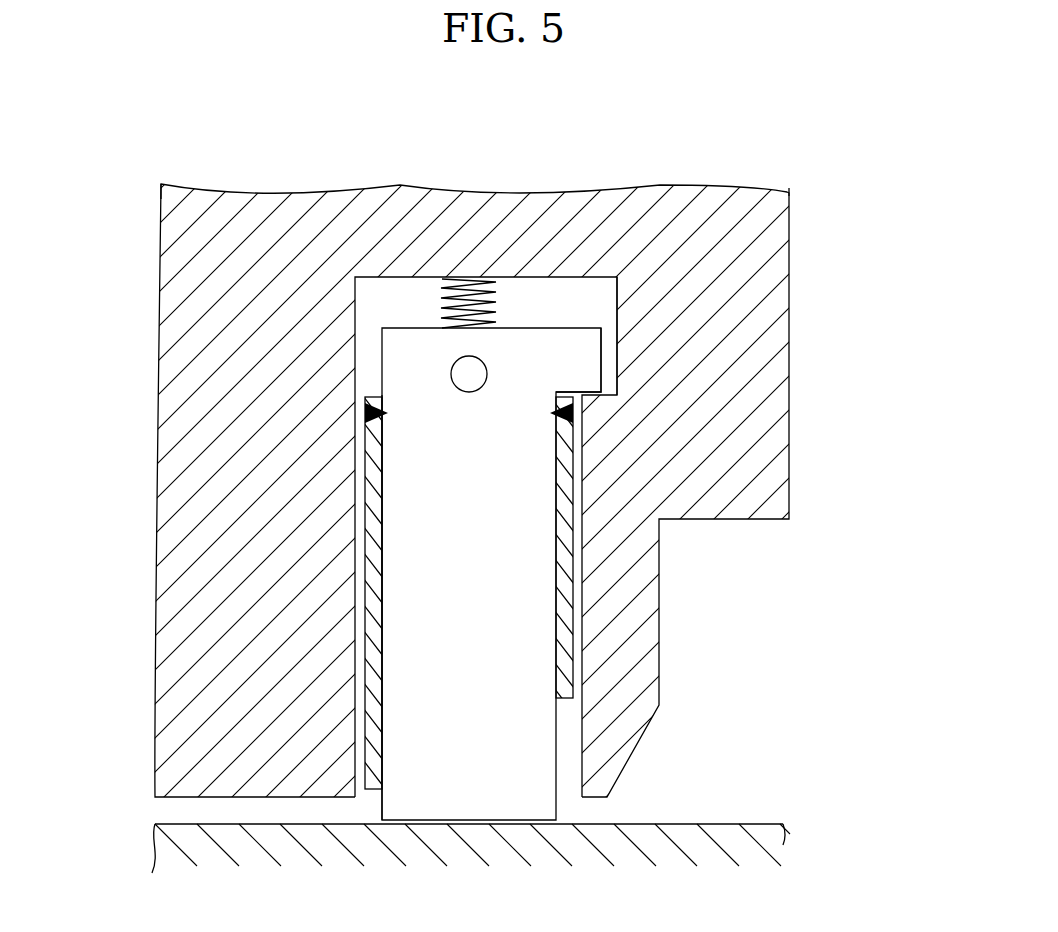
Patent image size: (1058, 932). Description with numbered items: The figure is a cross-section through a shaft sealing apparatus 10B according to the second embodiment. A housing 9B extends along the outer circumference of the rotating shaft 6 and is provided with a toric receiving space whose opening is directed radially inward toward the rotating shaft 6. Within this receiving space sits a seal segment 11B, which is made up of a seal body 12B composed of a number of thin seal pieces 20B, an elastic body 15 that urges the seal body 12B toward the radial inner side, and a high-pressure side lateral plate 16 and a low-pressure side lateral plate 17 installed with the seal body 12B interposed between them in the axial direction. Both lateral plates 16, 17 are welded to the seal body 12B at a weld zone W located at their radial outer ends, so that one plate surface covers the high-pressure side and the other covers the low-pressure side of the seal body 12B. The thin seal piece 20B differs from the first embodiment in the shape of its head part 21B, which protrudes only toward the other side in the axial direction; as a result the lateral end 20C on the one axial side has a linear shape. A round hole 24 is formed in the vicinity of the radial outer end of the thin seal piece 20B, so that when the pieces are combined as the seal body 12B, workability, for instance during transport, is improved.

The shaft sealing apparatus 10B is at (753, 158).
The housing 9B is at (770, 232).
The seal segment 11B is at (517, 300).
The seal body 12B is at (551, 312).
The elastic body 15 is at (465, 300).
The high-pressure side lateral plate 16 is at (372, 562).
The low-pressure side lateral plate 17 is at (563, 608).
The thin seal piece 20B is at (545, 762).
The lateral end 20C is at (380, 647).
The head part 21B is at (588, 360).
The round hole 24 is at (455, 375).
The rotating shaft 6 is at (757, 827).
The weld zone W is at (365, 413).